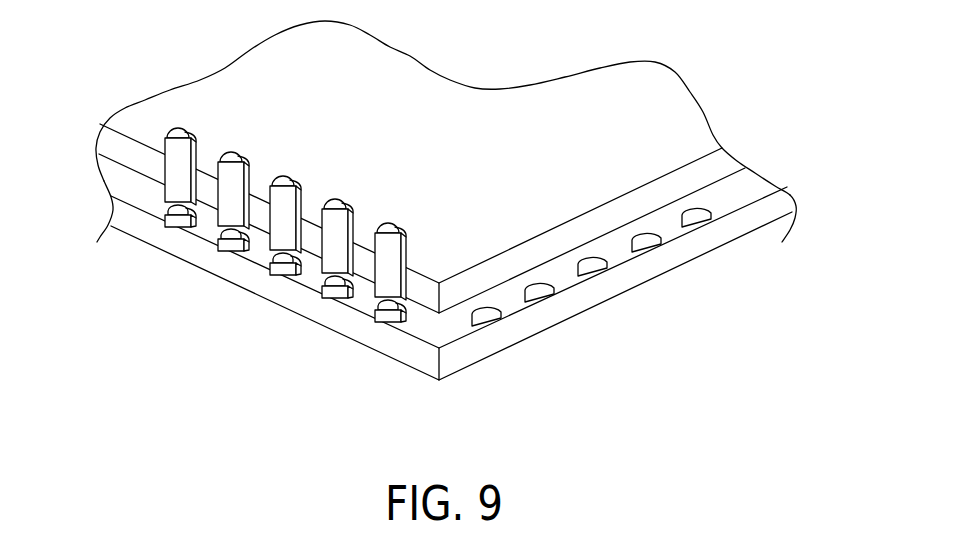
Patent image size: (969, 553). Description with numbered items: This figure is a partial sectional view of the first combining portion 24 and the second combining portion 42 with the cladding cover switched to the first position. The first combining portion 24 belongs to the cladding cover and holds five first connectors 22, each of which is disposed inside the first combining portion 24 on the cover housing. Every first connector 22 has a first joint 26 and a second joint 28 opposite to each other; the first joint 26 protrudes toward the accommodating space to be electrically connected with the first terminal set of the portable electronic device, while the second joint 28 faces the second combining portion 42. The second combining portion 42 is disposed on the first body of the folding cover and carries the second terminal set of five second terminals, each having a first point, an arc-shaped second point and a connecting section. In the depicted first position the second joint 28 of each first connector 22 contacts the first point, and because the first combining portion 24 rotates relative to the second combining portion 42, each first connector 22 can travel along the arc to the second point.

The first connector 22 is at (146, 118).
The first combining portion 24 is at (632, 132).
The first joint 26 is at (178, 130).
The second joint 28 is at (135, 136).
The second combining portion 42 is at (775, 207).